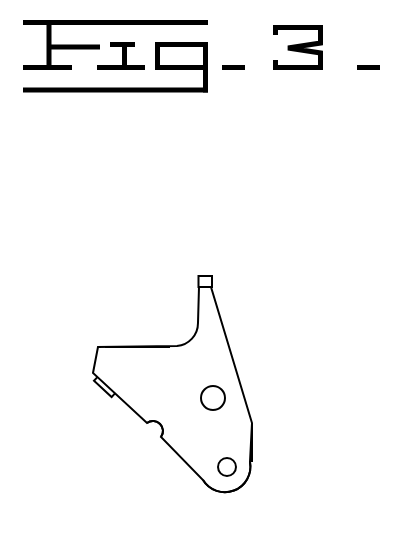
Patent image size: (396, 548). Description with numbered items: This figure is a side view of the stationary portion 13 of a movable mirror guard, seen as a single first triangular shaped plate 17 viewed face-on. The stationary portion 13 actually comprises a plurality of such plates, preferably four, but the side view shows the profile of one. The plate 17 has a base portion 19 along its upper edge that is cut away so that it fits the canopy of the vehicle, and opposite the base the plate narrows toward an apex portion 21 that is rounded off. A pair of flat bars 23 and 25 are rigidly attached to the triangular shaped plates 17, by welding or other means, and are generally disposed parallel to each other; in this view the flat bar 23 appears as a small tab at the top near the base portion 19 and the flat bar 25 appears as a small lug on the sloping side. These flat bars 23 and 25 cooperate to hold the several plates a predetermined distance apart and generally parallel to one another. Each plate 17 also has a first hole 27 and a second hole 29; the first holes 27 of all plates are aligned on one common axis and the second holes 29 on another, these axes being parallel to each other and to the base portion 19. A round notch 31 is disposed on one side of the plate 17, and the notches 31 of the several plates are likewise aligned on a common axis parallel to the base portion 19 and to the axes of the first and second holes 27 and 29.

The stationary portion 13 is at (223, 317).
The first triangular shaped plate 17 is at (237, 427).
The base portion 19 is at (143, 347).
The apex portion 21 is at (227, 492).
The flat bar 23 is at (212, 276).
The flat bar 25 is at (97, 390).
The first hole 27 is at (213, 398).
The second hole 29 is at (227, 467).
The round notch 31 is at (153, 432).